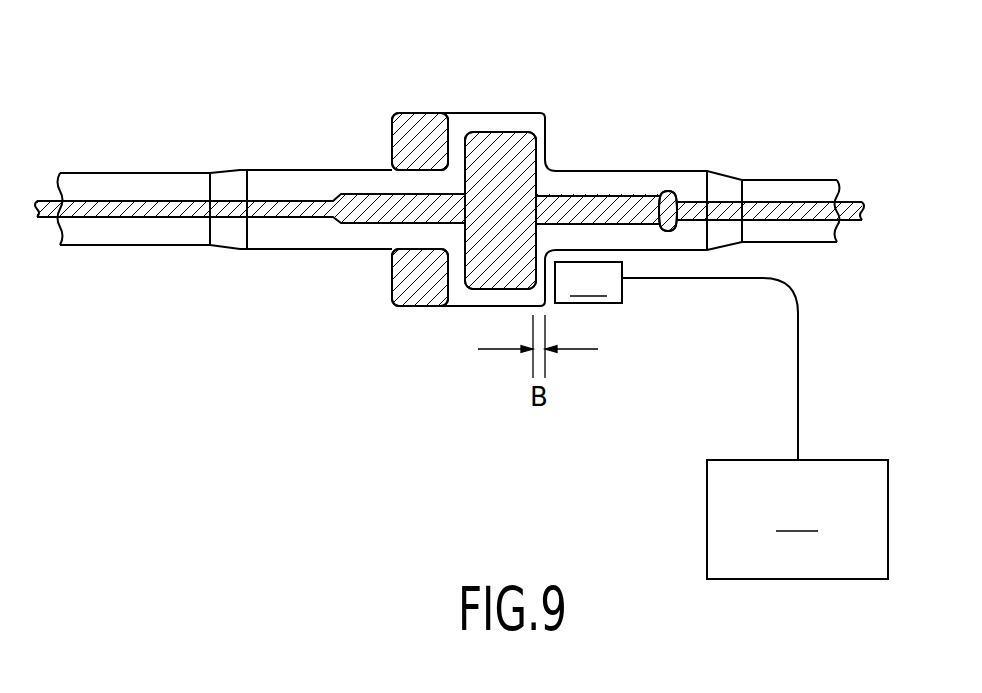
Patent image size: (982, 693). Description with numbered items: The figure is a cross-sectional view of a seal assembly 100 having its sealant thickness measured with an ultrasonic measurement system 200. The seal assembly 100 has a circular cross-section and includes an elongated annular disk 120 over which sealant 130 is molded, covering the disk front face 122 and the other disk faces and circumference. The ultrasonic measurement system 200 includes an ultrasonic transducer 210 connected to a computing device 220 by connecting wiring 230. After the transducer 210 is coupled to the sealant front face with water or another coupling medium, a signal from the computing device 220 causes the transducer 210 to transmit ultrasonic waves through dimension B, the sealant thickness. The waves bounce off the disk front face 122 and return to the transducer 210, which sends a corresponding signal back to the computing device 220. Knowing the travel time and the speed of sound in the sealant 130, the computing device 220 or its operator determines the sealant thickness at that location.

The seal assembly 100 is at (537, 161).
The disk 120 is at (485, 131).
The disk front face 122 is at (541, 148).
The sealant 130 is at (538, 114).
The ultrasonic measurement system 200 is at (721, 420).
The ultrasonic transducer 210 is at (588, 282).
The computing device 220 is at (797, 519).
The connecting wiring 230 is at (798, 380).